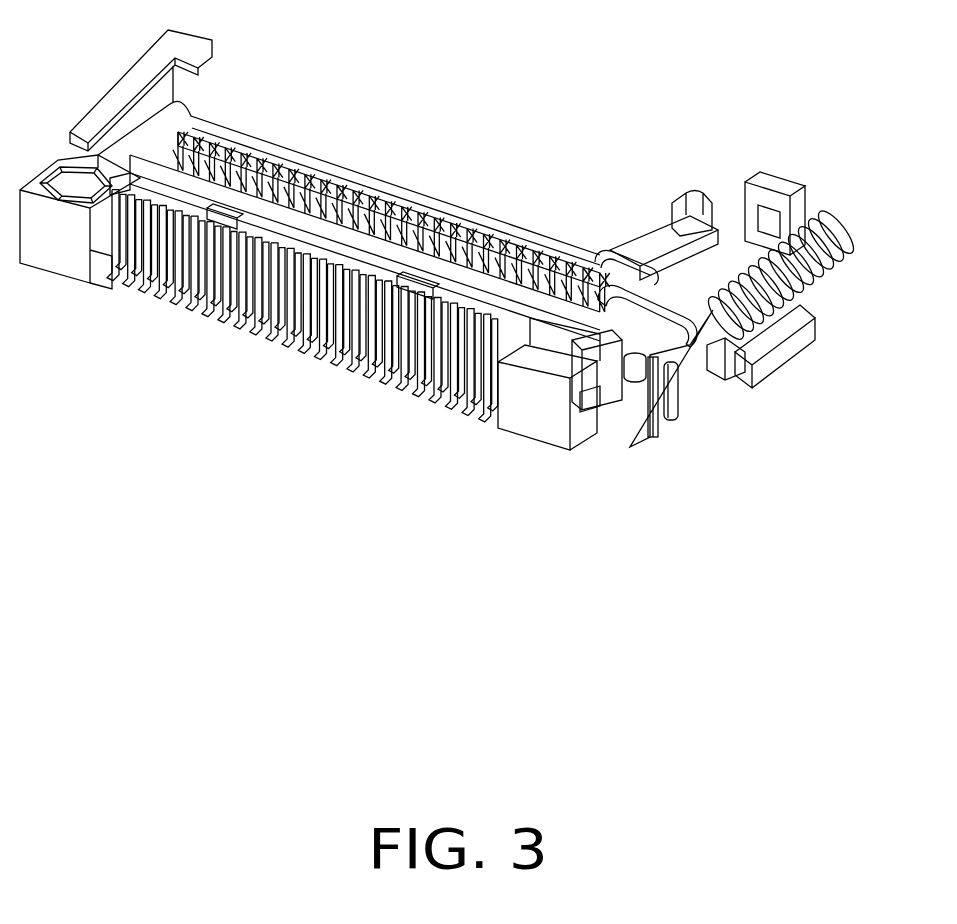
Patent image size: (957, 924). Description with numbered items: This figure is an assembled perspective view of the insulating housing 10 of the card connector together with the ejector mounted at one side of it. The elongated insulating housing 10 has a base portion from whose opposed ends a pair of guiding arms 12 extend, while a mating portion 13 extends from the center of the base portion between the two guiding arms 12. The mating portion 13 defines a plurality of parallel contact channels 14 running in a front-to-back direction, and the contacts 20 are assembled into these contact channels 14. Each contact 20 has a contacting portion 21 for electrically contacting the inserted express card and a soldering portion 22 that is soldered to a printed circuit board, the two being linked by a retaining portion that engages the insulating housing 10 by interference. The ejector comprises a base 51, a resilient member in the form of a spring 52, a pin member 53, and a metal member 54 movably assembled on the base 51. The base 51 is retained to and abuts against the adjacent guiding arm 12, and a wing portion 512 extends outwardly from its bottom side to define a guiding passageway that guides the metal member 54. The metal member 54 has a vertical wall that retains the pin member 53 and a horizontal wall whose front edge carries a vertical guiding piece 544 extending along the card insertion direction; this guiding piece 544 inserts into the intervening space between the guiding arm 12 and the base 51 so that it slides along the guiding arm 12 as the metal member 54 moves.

The insulating housing 10 is at (528, 413).
The guiding arms 12 is at (693, 228).
The mating portion 13 is at (467, 230).
The contact channels 14 is at (413, 210).
The contacts 20 is at (548, 250).
The contacting portion 21 is at (303, 160).
The soldering portion 22 is at (282, 338).
The base 51 is at (772, 193).
The spring 52 is at (832, 243).
The wing portion 512 is at (772, 323).
The pin member 53 is at (732, 377).
The metal member 54 is at (695, 380).
The guiding piece 544 is at (620, 370).